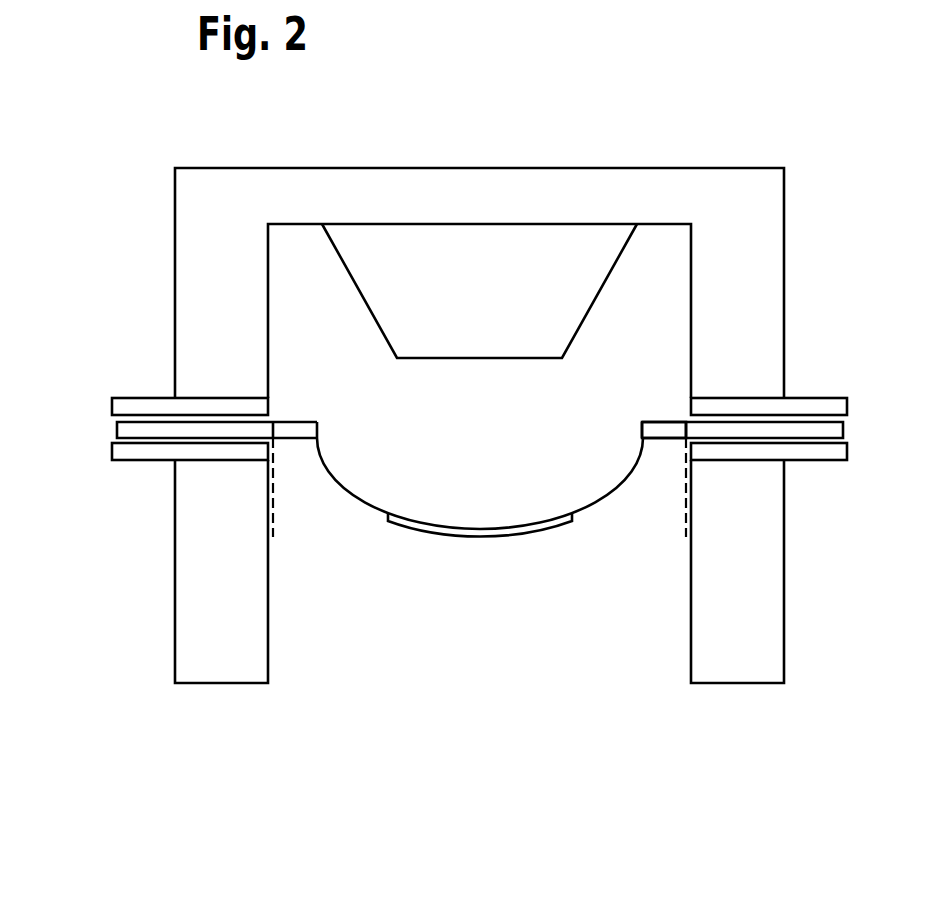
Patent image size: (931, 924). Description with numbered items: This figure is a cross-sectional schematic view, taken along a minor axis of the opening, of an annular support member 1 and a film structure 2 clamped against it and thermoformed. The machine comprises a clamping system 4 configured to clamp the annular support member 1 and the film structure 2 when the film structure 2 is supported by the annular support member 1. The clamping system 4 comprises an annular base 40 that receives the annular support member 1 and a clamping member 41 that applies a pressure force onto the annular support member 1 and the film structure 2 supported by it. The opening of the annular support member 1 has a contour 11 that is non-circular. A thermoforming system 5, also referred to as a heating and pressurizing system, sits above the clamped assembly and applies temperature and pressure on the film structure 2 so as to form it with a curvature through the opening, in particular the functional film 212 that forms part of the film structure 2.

The clamping system 4 is at (148, 272).
The clamping member 41 is at (138, 397).
The annular support member 1 is at (117, 428).
The contour 11 is at (640, 422).
The annular base 40 is at (145, 463).
The thermoforming system 5 is at (490, 328).
The film structure 2 is at (615, 490).
The functional film 212 is at (498, 537).